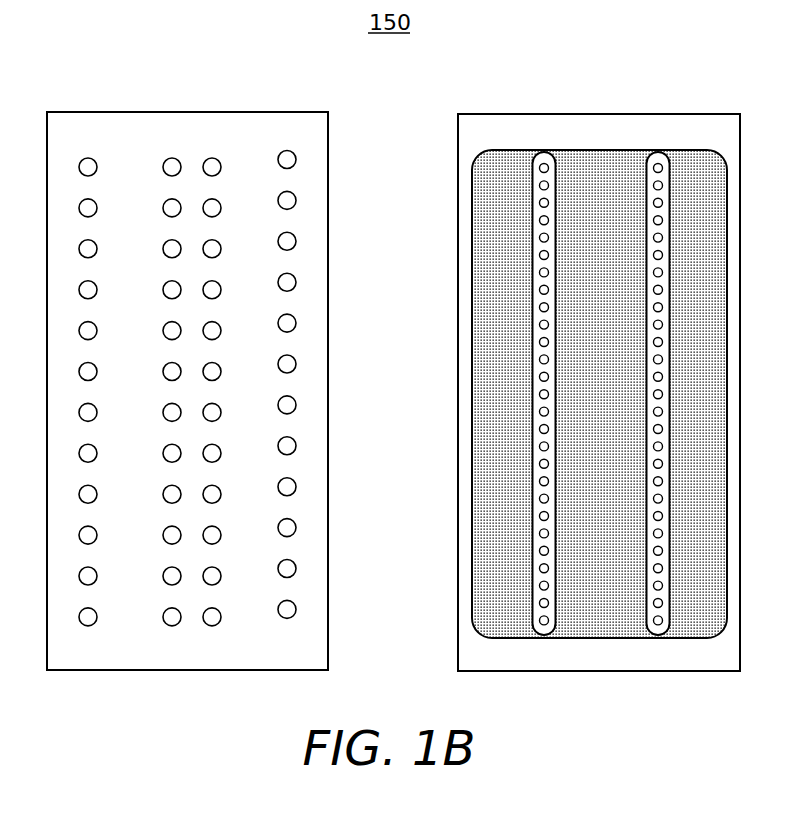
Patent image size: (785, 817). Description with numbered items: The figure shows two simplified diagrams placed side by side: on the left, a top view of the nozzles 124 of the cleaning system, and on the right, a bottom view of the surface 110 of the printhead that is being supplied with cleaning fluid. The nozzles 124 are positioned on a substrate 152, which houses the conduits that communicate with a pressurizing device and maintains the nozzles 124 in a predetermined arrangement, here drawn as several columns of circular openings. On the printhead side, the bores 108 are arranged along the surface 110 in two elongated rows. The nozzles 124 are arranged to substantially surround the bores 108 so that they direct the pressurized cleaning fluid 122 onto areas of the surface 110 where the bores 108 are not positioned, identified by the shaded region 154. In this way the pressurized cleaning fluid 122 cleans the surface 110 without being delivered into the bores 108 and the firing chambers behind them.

The nozzles 124 is at (93, 158).
The substrate 152 is at (258, 112).
The bores 108 is at (540, 158).
The surface 110 is at (642, 114).
The pressurized cleaning fluid 122 is at (478, 160).
The shaded region 154 is at (472, 267).